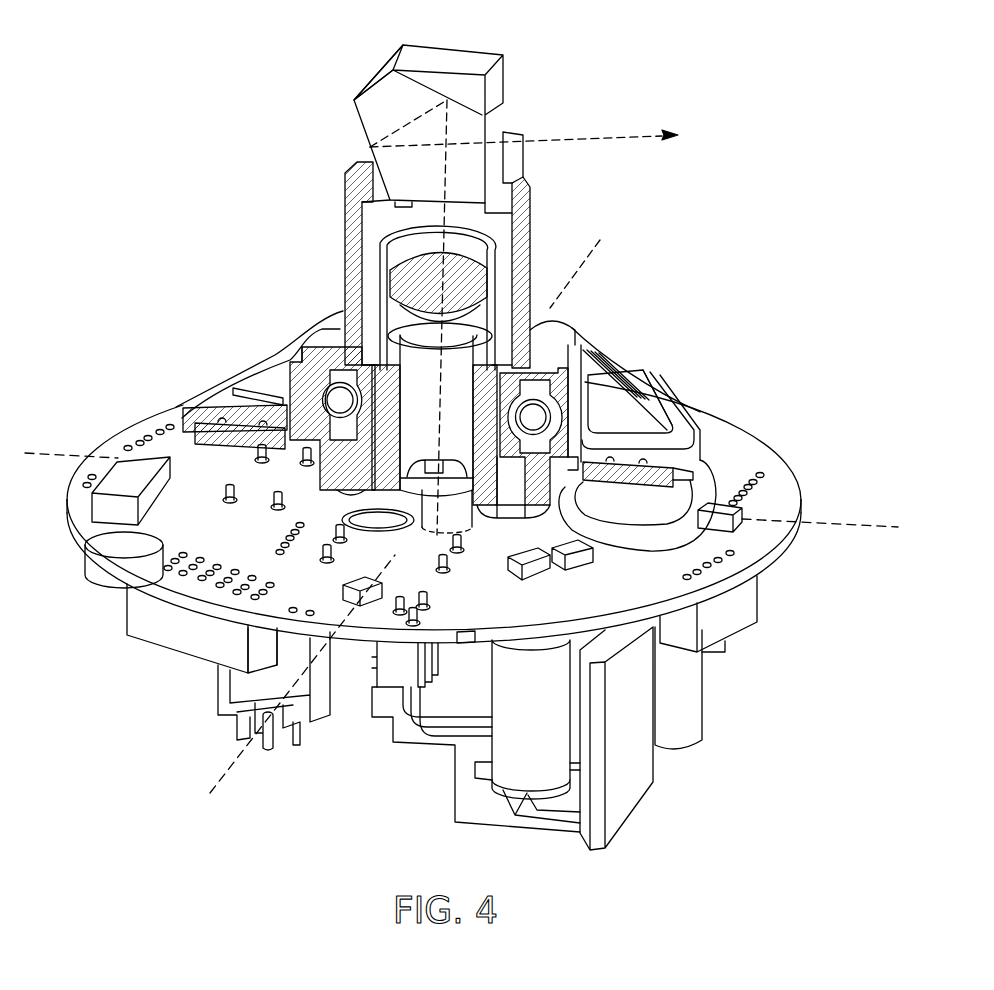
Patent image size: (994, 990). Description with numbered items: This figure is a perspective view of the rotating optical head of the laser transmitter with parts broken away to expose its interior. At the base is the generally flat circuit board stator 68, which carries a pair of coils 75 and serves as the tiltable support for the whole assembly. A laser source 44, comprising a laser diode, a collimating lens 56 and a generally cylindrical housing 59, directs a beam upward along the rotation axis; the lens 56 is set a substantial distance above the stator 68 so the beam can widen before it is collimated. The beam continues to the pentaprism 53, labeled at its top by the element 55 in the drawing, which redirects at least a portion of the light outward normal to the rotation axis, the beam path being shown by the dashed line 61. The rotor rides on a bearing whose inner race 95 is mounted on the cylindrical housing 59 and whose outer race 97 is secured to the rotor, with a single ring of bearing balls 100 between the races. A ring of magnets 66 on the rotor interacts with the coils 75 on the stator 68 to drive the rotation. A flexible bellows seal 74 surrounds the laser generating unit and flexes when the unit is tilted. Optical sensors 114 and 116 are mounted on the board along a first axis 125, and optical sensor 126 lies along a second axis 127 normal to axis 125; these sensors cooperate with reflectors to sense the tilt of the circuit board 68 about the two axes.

The laser source 44 is at (433, 495).
The pentaprism 53 is at (367, 108).
The prism 55 is at (455, 82).
The collimating lens 56 is at (467, 290).
The generally cylindrical housing 59 is at (487, 366).
The dashed line 61 is at (593, 143).
The magnets 66 is at (215, 437).
The circuit board stator 68 is at (788, 496).
The flexible bellows seal 74 is at (362, 187).
The coils 75 is at (700, 485).
The inner race 95 is at (508, 387).
The outer race 97 is at (541, 413).
The bearing balls 100 is at (338, 400).
The optical sensor 114 is at (150, 455).
The optical sensor 116 is at (718, 523).
The first axis 125 is at (848, 526).
The optical sensor 126 is at (360, 585).
The second axis 127 is at (238, 770).